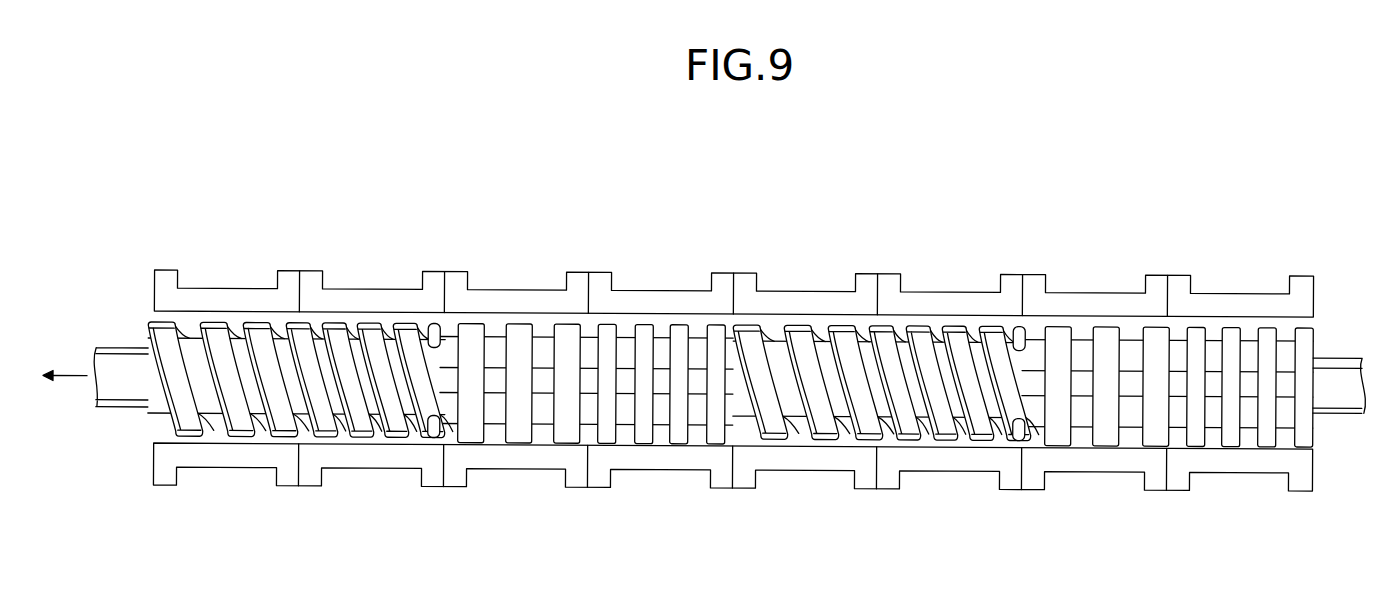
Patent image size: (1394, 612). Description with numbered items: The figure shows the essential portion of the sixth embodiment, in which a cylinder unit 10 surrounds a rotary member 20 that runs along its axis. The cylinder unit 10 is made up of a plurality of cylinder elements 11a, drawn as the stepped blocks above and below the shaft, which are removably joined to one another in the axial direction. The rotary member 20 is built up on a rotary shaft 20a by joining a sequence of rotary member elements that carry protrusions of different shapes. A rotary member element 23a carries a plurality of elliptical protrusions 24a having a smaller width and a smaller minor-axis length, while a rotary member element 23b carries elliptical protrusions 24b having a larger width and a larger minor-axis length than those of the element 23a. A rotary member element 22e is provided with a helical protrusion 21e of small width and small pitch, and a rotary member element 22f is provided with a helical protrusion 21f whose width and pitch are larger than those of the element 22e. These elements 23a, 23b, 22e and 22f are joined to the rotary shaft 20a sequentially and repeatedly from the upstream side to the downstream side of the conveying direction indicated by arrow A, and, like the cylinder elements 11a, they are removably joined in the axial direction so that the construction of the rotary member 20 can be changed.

The cylinder unit 10 is at (848, 230).
The cylinder element 11a is at (219, 295).
The rotary member 20 is at (1333, 318).
The rotary shaft 20a is at (1339, 404).
The helical protrusion 21e is at (379, 430).
The helical protrusion 21f is at (234, 430).
The rotary member element 22e is at (341, 428).
The rotary member element 22f is at (212, 428).
The rotary member element 23a is at (628, 430).
The rotary member element 23b is at (498, 430).
The elliptical protrusion 24a is at (644, 442).
The elliptical protrusion 24b is at (1108, 442).